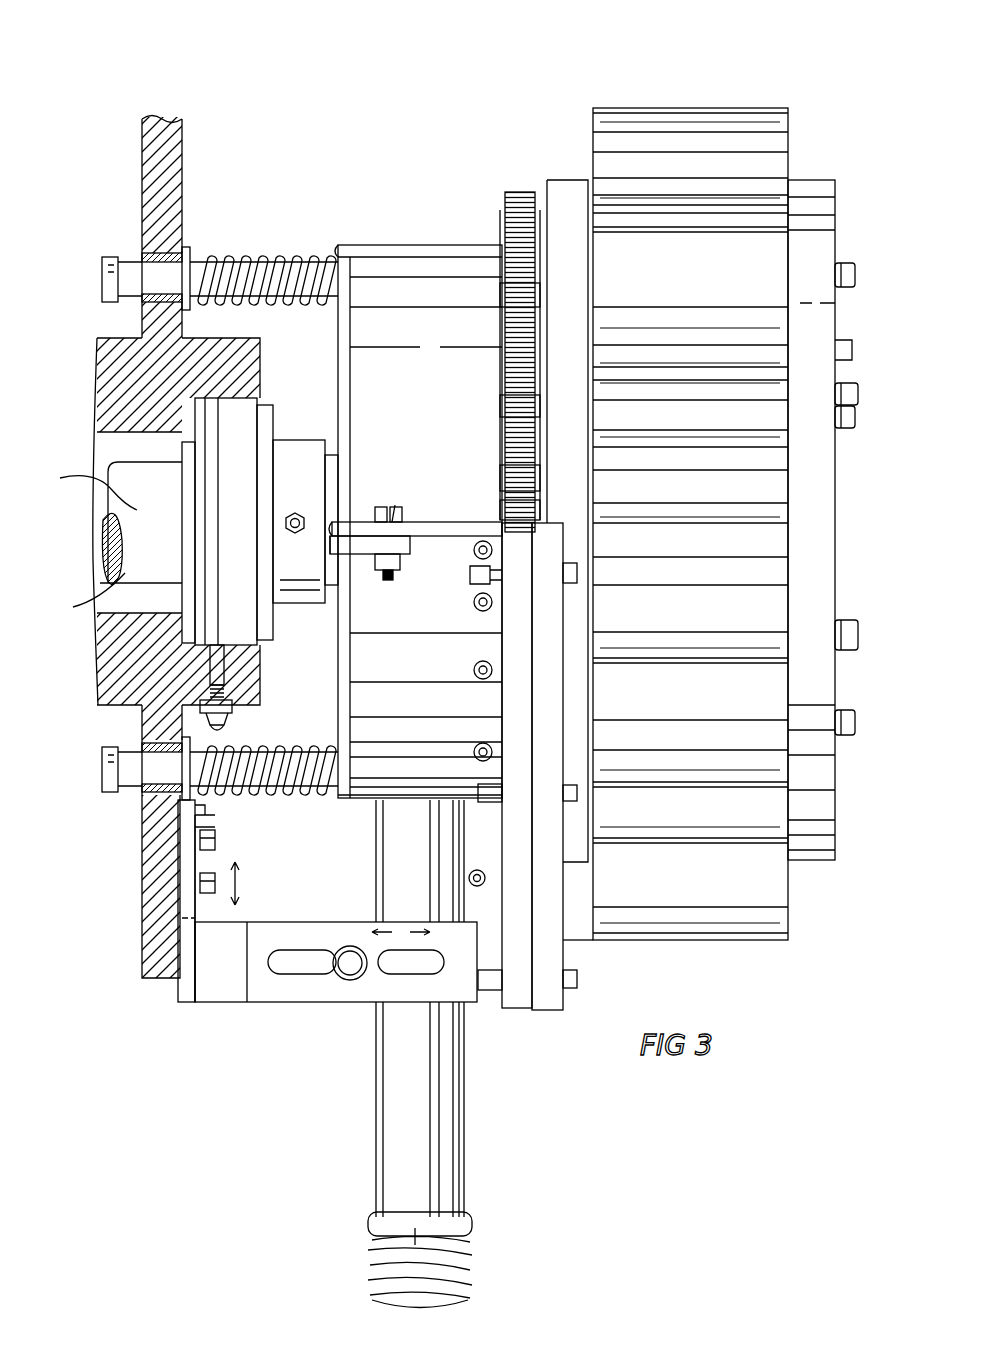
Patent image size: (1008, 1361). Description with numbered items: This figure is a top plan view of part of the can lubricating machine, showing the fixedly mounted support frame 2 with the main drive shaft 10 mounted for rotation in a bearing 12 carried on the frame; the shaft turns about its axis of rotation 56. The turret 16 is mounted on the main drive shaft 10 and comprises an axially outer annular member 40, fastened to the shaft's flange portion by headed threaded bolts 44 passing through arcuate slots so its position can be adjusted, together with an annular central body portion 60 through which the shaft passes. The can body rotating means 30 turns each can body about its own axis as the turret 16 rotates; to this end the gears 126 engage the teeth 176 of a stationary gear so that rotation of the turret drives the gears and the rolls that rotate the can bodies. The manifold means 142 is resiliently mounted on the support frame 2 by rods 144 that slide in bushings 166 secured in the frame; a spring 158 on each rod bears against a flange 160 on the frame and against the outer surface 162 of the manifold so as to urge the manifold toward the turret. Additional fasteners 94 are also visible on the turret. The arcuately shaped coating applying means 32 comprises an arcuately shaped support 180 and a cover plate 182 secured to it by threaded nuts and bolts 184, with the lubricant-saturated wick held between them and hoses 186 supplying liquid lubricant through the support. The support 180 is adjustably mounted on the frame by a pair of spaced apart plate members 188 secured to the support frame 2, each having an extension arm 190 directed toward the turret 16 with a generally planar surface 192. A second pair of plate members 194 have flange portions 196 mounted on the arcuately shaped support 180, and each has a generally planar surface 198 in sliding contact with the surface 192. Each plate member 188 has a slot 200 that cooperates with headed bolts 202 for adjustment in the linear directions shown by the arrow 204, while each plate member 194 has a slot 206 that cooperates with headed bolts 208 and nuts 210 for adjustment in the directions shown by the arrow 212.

The support frame 2 is at (182, 188).
The main drive shaft 10 is at (125, 580).
The bearing 12 is at (265, 440).
The turret 16 is at (690, 92).
The can body rotating means 30 is at (483, 210).
The arcuately shaped coating applying means 32 is at (590, 956).
The axially outer annular member 40 is at (830, 322).
The headed threaded bolts 44 is at (858, 410).
The axis of rotation 56 is at (110, 500).
The annular central body portion 60 is at (200, 815).
The bolt 94 is at (848, 266).
The gears 126 is at (522, 192).
The manifold means 142 is at (375, 246).
The rods 144 is at (262, 300).
The spring 158 is at (292, 256).
The flange 160 is at (190, 252).
The outer surface 162 is at (343, 656).
The bushings 166 is at (150, 258).
The teeth 176 is at (505, 305).
The arcuately shaped support 180 is at (512, 1008).
The cover plate 182 is at (548, 1010).
The threaded nuts and bolts 184 is at (575, 560).
The hoses 186 is at (476, 664).
The plate members 188 is at (185, 995).
The extension arm 190 is at (355, 554).
The generally planar surface 192 is at (368, 540).
The plate members 194 is at (470, 528).
The flange portions 196 is at (470, 564).
The generally planar surface 198 is at (408, 575).
The slot 200 is at (182, 908).
The headed bolts 202 is at (215, 885).
The arrow 204 is at (245, 885).
The slot 206 is at (420, 545).
The headed bolts 208 is at (393, 505).
The nuts 210 is at (400, 545).
The arrow 212 is at (398, 925).